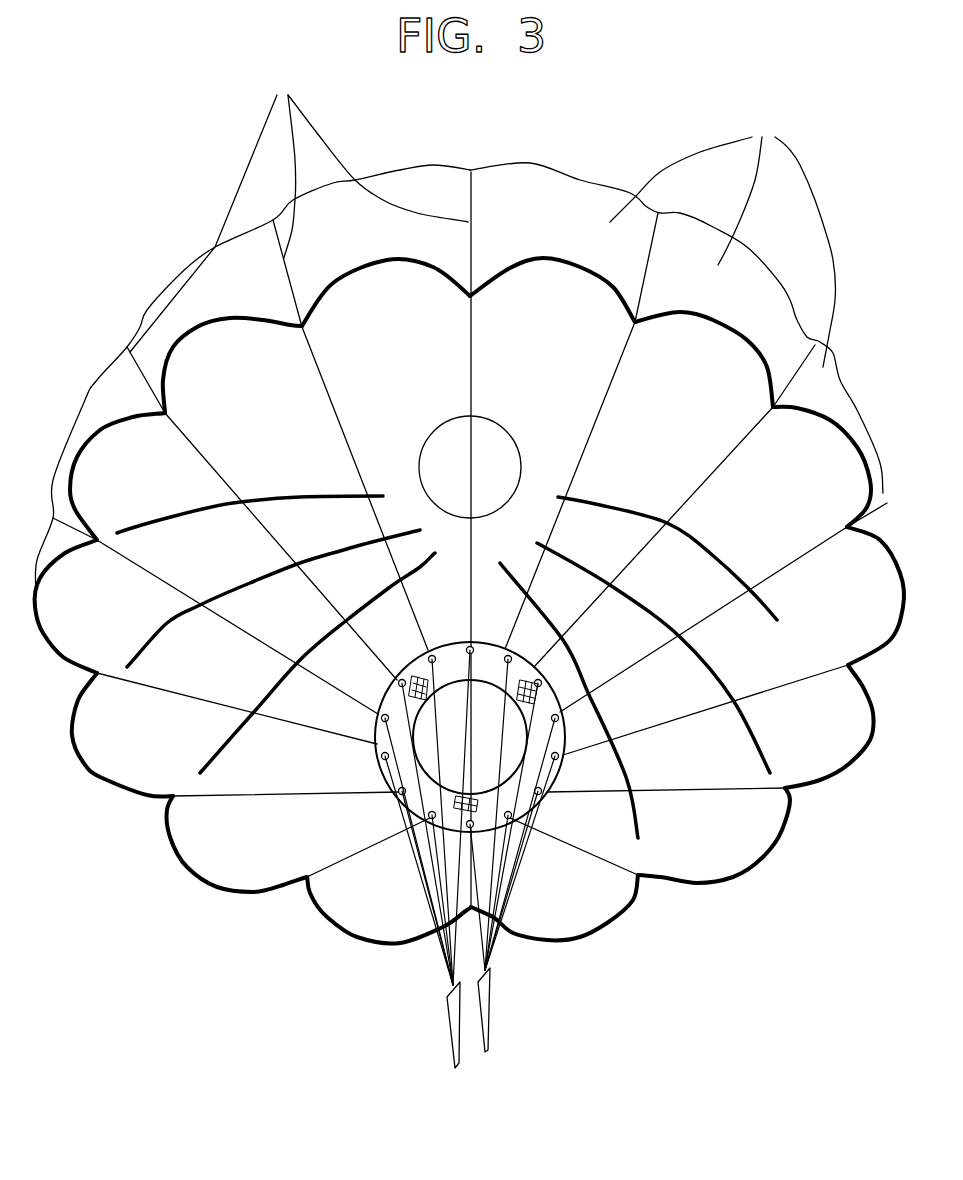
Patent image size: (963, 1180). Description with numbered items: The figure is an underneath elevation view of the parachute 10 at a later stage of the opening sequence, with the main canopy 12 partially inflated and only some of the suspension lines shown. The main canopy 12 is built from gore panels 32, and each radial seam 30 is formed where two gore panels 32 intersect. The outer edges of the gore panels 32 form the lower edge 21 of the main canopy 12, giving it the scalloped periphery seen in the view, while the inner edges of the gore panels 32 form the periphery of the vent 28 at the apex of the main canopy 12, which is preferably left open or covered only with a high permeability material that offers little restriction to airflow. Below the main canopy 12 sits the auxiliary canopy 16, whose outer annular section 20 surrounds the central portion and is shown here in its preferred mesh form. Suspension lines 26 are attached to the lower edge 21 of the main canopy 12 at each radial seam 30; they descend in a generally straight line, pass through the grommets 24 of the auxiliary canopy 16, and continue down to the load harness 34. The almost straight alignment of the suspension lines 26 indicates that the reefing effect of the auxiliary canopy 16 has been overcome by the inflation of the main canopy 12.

The parachute 10 is at (237, 915).
The main canopy 12 is at (804, 746).
The auxiliary canopy 16 is at (572, 814).
The outer annular section 20 is at (377, 744).
The lower edge 21 is at (883, 493).
The grommets 24 is at (400, 798).
The suspension lines 26 is at (515, 880).
The vent 28 is at (495, 452).
The radial seam 30 is at (299, 204).
The gore panels 32 is at (722, 232).
The load harness 34 is at (493, 993).